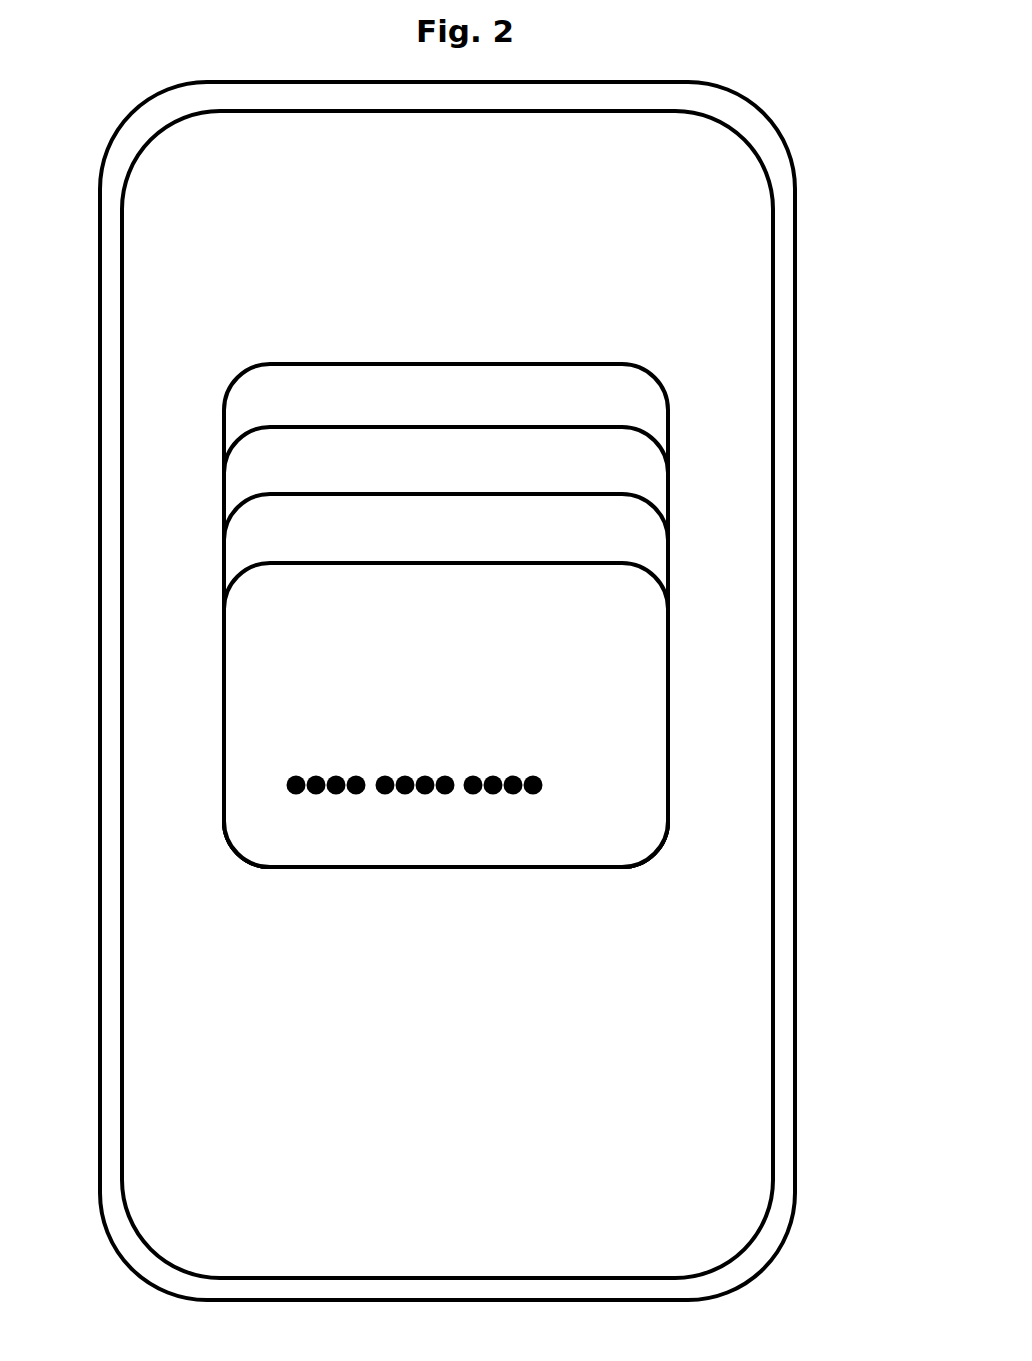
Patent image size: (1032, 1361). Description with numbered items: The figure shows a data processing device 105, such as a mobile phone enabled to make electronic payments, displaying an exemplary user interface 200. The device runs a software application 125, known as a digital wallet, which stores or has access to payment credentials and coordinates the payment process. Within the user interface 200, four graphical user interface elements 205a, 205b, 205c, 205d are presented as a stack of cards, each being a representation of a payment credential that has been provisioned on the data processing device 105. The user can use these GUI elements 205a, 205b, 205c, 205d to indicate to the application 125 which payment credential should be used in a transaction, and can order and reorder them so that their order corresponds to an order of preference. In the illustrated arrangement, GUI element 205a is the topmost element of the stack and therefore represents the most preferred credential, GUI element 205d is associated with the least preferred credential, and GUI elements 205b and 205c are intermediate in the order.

The data processing device 105 is at (142, 108).
The user interface 200 is at (120, 224).
The software application 125 is at (120, 355).
The GUI element 205a is at (647, 625).
The GUI element 205b is at (647, 552).
The GUI element 205c is at (647, 483).
The GUI element 205d is at (647, 409).